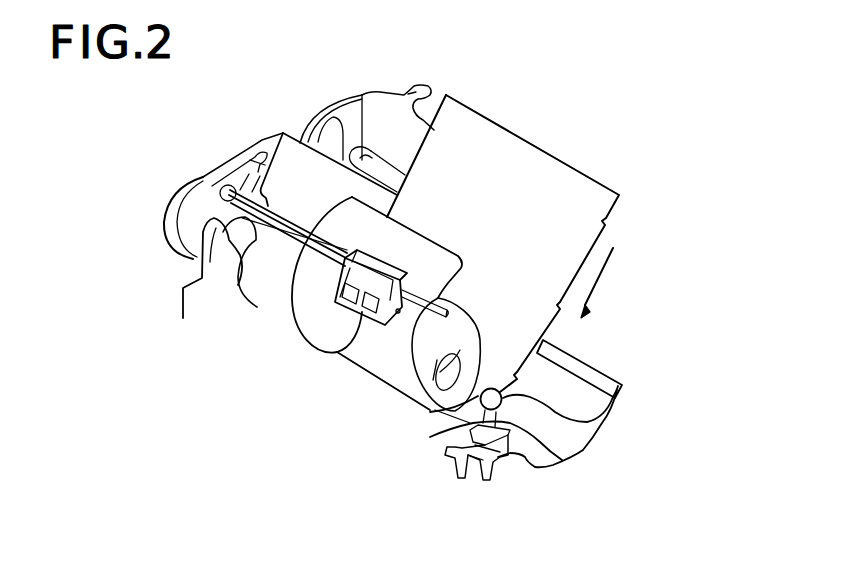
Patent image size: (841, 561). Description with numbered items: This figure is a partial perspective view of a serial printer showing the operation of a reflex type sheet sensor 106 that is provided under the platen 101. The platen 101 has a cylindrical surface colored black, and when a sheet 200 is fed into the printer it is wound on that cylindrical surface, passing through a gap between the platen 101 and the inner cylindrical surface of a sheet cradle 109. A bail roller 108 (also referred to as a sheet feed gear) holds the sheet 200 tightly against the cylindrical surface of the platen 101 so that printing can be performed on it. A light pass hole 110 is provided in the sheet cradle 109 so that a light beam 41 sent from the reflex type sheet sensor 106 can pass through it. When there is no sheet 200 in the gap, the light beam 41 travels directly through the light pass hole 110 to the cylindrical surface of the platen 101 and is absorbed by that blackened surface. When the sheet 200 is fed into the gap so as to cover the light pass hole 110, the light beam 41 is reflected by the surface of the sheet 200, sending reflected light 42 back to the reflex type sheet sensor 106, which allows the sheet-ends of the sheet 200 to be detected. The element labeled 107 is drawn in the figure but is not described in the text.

The sheet 200 is at (527, 150).
The roller end cap 107 is at (193, 183).
The platen 101 is at (255, 282).
The bail roller 108 is at (337, 352).
The sheet cradle 109 is at (565, 383).
The light pass hole 110 is at (610, 415).
The reflected light 42 is at (590, 457).
The light beam 41 is at (457, 418).
The reflex type sheet sensor 106 is at (500, 462).